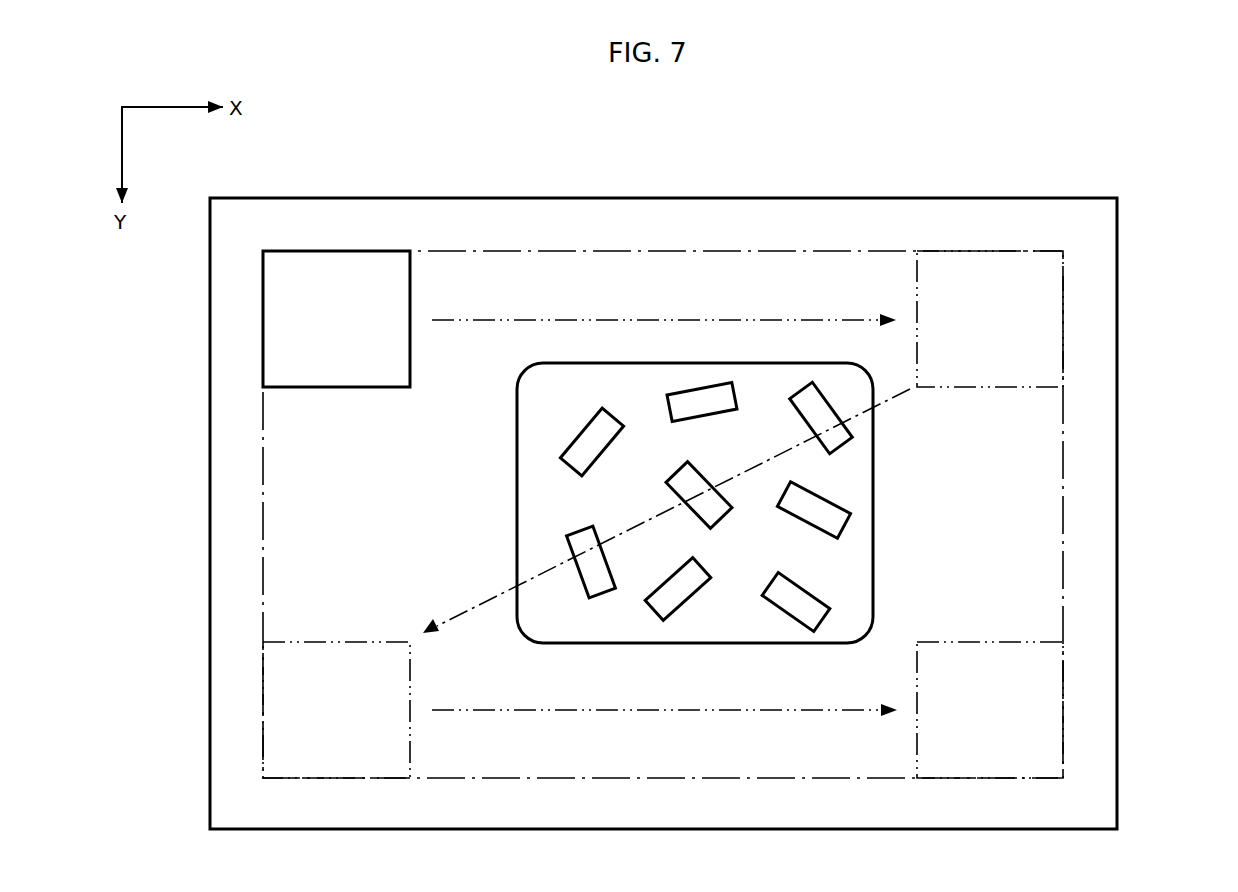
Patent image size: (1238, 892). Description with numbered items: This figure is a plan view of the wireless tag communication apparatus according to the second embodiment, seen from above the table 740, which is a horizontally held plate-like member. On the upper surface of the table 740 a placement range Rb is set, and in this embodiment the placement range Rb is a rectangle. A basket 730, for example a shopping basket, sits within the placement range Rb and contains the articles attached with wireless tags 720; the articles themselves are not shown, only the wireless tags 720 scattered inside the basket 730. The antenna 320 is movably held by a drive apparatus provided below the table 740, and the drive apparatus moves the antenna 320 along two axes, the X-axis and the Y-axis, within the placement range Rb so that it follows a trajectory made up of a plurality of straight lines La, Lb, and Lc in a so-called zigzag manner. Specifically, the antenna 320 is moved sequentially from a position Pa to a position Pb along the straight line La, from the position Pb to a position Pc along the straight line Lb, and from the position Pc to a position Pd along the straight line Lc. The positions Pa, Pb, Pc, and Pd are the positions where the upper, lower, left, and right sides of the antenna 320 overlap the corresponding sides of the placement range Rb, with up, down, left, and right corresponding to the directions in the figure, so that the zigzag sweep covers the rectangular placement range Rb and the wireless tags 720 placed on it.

The antenna 320 is at (380, 270).
The wireless tag 720 is at (685, 392).
The basket 730 is at (874, 487).
The table 740 is at (1118, 232).
The placement range Rb is at (692, 250).
The position Pa is at (335, 322).
The position Pb is at (990, 319).
The position Pc is at (336, 710).
The position Pd is at (990, 710).
The straight line La is at (664, 307).
The straight line Lb is at (666, 511).
The straight line Lc is at (664, 697).